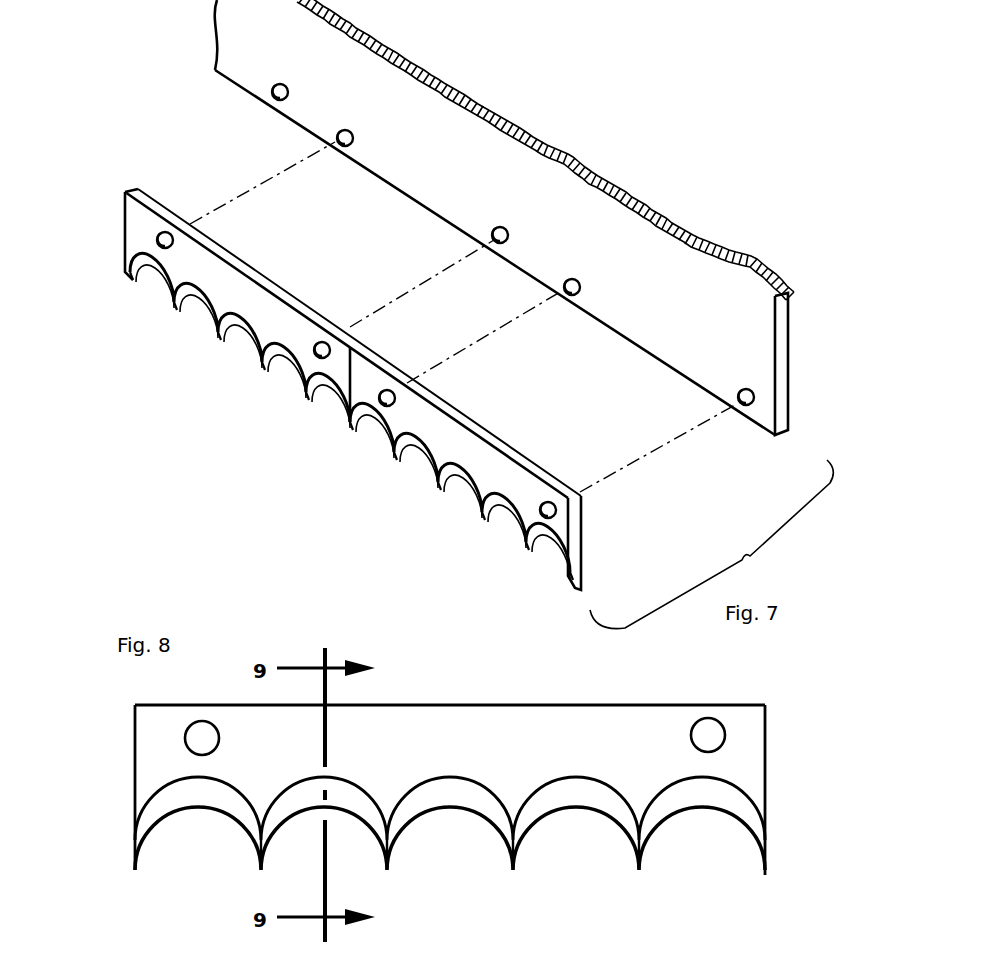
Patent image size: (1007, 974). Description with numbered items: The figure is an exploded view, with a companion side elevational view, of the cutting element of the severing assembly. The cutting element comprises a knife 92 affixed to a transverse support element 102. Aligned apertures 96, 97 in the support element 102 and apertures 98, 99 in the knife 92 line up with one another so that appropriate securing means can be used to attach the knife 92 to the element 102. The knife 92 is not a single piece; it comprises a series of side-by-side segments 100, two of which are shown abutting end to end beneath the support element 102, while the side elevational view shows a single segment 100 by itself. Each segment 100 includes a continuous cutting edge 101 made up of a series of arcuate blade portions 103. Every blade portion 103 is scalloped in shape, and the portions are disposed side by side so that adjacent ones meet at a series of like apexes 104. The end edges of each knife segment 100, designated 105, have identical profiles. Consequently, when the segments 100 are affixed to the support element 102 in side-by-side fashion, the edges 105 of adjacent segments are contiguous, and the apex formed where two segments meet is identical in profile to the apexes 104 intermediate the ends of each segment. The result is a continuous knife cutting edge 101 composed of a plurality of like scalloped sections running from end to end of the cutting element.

In FIG. 7, the knife 92 is at (198, 340).
In FIG. 7, the aperture 96 is at (752, 394).
In FIG. 7, the aperture 97 is at (580, 292).
In FIG. 7, the aperture 98 is at (548, 522).
In FIG. 8, the aperture 98 is at (708, 722).
In FIG. 7, the aperture 99 is at (386, 408).
In FIG. 8, the aperture 99 is at (213, 728).
In FIG. 7, the knife segment 100 is at (270, 280).
In FIG. 8, the knife segment 100 is at (477, 727).
In FIG. 8, the cutting edge 101 is at (202, 808).
In FIG. 7, the transverse support element 102 is at (590, 192).
In FIG. 7, the arcuate blade portion 103 is at (236, 328).
In FIG. 8, the arcuate blade portion 103 is at (697, 793).
In FIG. 7, the apex 104 is at (178, 308).
In FIG. 8, the apex 104 is at (513, 872).
In FIG. 7, the edge of knife segment 105 is at (125, 236).
In FIG. 8, the edge of knife segment 105 is at (135, 760).